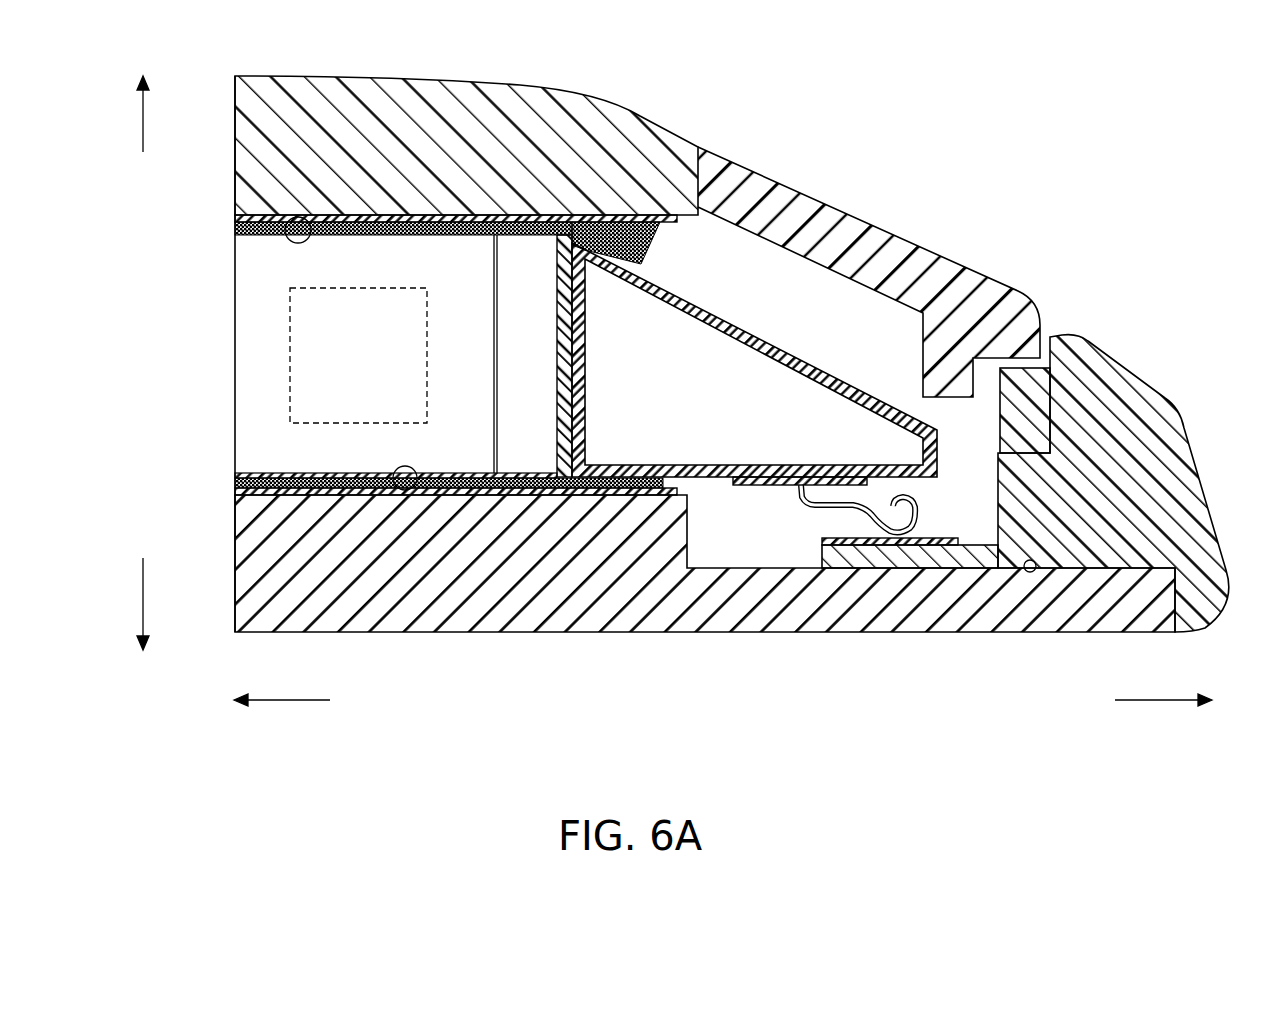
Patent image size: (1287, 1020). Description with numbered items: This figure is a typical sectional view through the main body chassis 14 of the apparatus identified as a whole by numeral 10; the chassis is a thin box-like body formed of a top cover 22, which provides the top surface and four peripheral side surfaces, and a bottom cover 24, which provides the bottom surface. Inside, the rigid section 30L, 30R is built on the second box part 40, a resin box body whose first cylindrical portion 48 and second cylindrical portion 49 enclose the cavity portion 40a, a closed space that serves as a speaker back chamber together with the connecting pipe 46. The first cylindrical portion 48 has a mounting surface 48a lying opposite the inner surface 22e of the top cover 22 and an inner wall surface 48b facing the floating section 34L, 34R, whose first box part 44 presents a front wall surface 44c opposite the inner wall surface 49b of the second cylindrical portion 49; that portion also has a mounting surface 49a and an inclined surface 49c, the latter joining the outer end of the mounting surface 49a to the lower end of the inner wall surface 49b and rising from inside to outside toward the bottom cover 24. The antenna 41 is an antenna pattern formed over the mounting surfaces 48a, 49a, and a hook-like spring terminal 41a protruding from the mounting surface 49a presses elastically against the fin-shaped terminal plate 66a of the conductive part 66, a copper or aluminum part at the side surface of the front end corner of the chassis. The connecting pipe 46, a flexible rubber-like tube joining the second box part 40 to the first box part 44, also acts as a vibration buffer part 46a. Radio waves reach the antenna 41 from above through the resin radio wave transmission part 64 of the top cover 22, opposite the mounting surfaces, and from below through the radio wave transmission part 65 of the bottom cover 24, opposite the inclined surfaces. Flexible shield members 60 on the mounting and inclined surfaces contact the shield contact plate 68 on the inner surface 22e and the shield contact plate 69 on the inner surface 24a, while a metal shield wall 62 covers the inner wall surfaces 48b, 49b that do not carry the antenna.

The electronic device 10 is at (106, 39).
The main body chassis 14 is at (1070, 199).
The top cover 22 is at (1129, 415).
The inner surface of top cover 22e is at (422, 496).
The bottom cover 24 is at (637, 214).
The inner surface of bottom cover 24a is at (292, 217).
The rigid section 30L is at (694, 280).
The right operation portion 30R is at (754, 340).
The floating section 34L is at (248, 276).
The right operation button 34R is at (365, 354).
The second box part 40 is at (586, 378).
The cavity portion 40a is at (779, 421).
The antenna 41 is at (772, 486).
The spring terminal 41a is at (915, 517).
The first box part 44 is at (324, 331).
The front wall surface 44c is at (497, 308).
The connecting pipe 46 is at (290, 322).
The vibration buffer part 46a is at (358, 355).
The first cylindrical portion 48 is at (546, 460).
The mounting surface 48a is at (322, 497).
The inner wall surface 48b is at (522, 247).
The second cylindrical portion 49 is at (667, 497).
The mounting surface 49a is at (720, 486).
The inner wall surface 49b is at (557, 307).
The inclined surface 49c is at (727, 312).
The shield members 60 is at (405, 214).
The shield wall 62 is at (561, 372).
The radio wave transmission part 64 is at (843, 618).
The radio wave transmission part 65 is at (838, 237).
The conductive part 66 is at (1175, 487).
The terminal plate 66a is at (900, 560).
The shield contact plate 68 is at (460, 497).
The shield contact plate 69 is at (345, 214).